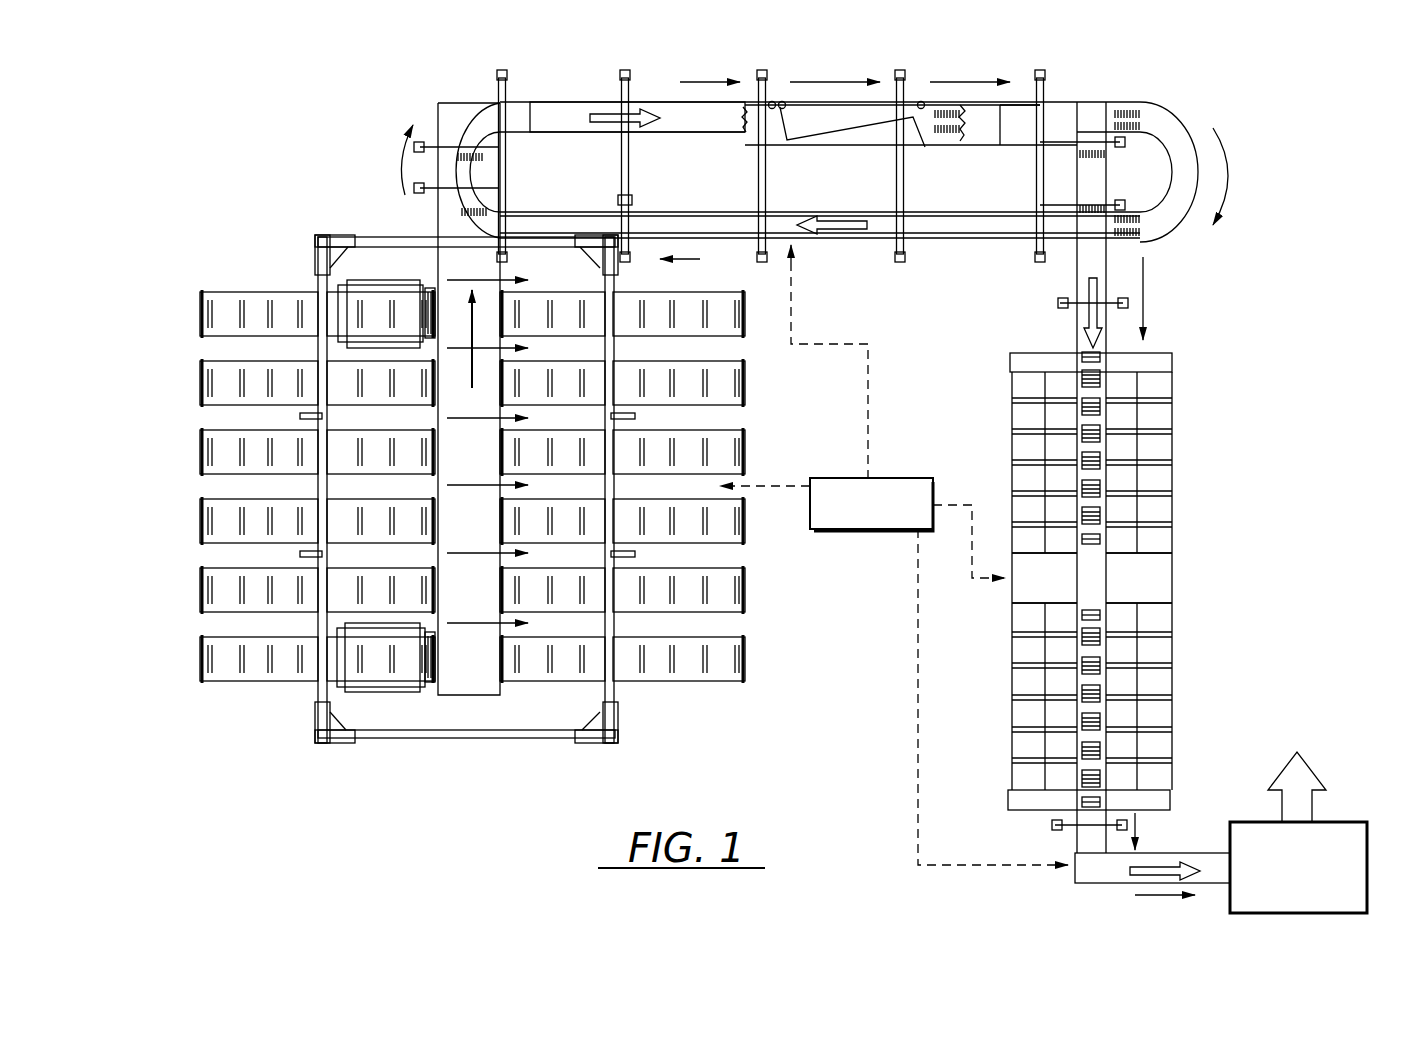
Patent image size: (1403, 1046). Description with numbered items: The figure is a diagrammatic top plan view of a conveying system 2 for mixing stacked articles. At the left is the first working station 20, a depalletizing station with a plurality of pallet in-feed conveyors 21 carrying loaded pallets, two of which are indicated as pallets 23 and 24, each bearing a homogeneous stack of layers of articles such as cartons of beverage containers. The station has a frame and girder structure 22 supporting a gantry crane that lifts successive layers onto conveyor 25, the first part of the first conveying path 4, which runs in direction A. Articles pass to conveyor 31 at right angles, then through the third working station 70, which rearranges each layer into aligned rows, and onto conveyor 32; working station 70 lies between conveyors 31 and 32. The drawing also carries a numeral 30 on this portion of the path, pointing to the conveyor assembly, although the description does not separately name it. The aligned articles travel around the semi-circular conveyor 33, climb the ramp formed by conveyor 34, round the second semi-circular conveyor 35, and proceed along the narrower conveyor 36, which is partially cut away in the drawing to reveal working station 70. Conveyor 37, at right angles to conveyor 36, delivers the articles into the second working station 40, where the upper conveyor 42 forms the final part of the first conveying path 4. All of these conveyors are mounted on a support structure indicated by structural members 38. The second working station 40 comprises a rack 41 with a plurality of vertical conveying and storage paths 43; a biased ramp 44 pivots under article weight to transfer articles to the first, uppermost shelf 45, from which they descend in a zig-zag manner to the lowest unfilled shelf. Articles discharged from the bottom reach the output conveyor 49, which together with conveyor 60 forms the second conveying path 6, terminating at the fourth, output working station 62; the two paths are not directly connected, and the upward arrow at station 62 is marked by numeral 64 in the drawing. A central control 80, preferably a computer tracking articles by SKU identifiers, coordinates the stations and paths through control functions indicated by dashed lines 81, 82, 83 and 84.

The conveying system 2 is at (915, 393).
The first conveying path 4 is at (435, 221).
The second conveying path 6 is at (1105, 887).
The first working station 20 is at (632, 698).
The pallet in-feed conveyors 21 is at (260, 300).
The frame and girder structure 22 is at (516, 738).
The loaded pallet 23 is at (415, 287).
The loaded pallet 24 is at (394, 690).
The conveyor 25 is at (487, 684).
The loop conveyor 30 is at (870, 245).
The conveyor 31 is at (465, 140).
The conveyor 32 is at (972, 140).
The semi-circular conveyor 33 is at (1173, 128).
The ramp conveyor 34 is at (985, 232).
The second semi-circular conveyor 35 is at (475, 130).
The conveyor 36 is at (575, 118).
The conveyor 37 is at (1104, 190).
The structural members 38 is at (630, 192).
The second working station 40 is at (1010, 465).
The rack 41 is at (1010, 598).
The upper conveyor 42 is at (1100, 568).
The vertical conveying and storage paths 43 is at (1172, 385).
The biased ramp 44 is at (1130, 612).
The first, uppermost shelf 45 is at (1160, 622).
The output conveyor 49 is at (1078, 830).
The conveyor 60 is at (1200, 862).
The fourth working station 62 is at (1228, 892).
The station output 64 is at (1312, 805).
The third working station 70 is at (855, 148).
The central control 80 is at (878, 530).
The dashed line 81 is at (788, 487).
The dashed line 82 is at (866, 378).
The dashed line 83 is at (985, 505).
The dashed line 84 is at (918, 630).